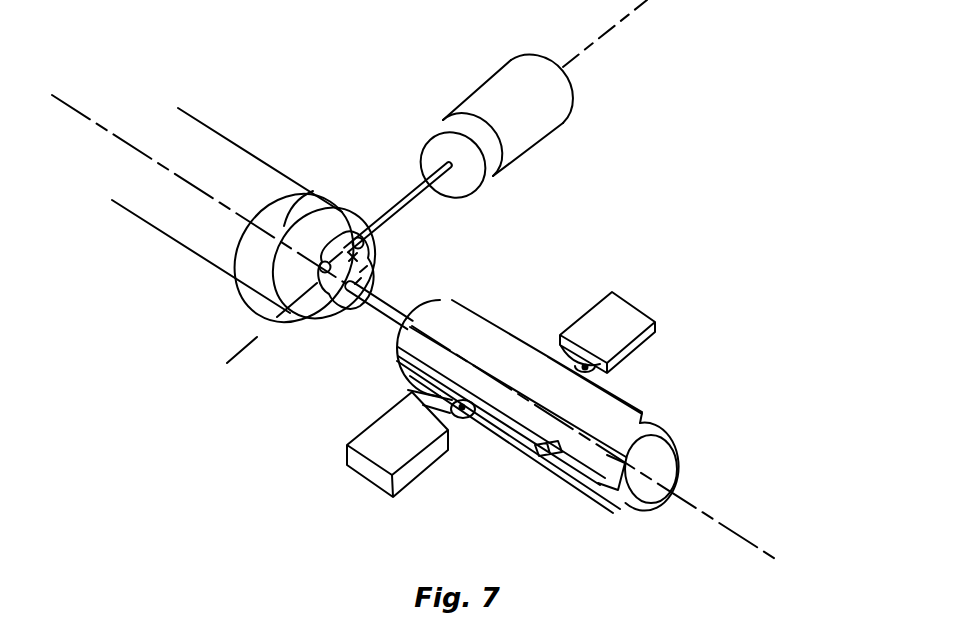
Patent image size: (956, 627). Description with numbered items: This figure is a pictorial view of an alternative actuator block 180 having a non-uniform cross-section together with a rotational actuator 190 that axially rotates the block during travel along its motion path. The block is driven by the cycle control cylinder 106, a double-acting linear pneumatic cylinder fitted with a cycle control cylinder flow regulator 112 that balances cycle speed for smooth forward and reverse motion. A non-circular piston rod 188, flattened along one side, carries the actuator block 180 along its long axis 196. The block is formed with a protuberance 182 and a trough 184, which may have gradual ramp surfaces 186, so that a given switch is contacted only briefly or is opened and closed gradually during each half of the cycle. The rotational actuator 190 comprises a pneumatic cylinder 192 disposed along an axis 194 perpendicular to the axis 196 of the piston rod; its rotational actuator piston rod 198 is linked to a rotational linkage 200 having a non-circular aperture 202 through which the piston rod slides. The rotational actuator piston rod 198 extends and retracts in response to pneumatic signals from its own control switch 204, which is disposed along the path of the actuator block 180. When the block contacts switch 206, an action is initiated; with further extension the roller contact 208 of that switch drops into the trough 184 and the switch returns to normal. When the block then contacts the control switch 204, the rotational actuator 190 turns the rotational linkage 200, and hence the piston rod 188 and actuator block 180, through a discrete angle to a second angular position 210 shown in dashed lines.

The cycle control cylinder 106 is at (195, 227).
The cycle control cylinder flow regulator 112 is at (262, 277).
The actuator block 180 is at (625, 423).
The protuberance 182 is at (613, 383).
The trough 184 is at (608, 467).
The gradual ramp surfaces 186 is at (548, 452).
The non-circular piston rod 188 is at (397, 297).
The rotational actuator 190 is at (512, 35).
The pneumatic cylinder 192 is at (537, 115).
The axis 194 is at (633, 10).
The axis of the piston rod 196 is at (760, 540).
The rotational actuator piston rod 198 is at (435, 187).
The rotational linkage 200 is at (332, 330).
The non-circular aperture 202 is at (307, 330).
The control switch 204 is at (620, 315).
The switch 206 is at (382, 450).
The roller contact 208 is at (472, 417).
The second angular position 210 is at (345, 222).